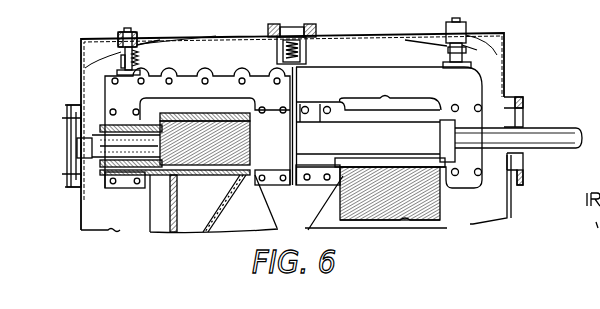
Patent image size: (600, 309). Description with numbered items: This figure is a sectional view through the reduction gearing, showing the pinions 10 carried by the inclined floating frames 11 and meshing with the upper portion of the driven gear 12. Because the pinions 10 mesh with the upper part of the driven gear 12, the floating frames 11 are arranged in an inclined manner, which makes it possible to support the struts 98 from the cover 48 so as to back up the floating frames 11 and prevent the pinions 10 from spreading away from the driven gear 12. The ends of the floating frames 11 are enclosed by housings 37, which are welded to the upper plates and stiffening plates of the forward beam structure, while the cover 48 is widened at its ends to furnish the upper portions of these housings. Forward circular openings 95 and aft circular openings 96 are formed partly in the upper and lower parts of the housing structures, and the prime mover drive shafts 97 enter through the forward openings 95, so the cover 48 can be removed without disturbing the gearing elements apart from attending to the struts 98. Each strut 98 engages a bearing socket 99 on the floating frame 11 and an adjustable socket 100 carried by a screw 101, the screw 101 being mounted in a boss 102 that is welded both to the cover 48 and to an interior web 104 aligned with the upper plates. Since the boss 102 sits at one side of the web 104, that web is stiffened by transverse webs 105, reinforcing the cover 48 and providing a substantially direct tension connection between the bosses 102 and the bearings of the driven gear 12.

The pinions 10 is at (207, 103).
The floating frames 11 is at (367, 66).
The driven gear 12 is at (383, 214).
The housings 37 is at (100, 186).
The cover 48 is at (216, 36).
The forward circular openings 95 is at (523, 121).
The aft circular openings 96 is at (68, 132).
The prime mover drive shafts 97 is at (570, 127).
The struts 98 is at (120, 50).
The bearing sockets 99 is at (142, 72).
The adjustable sockets 100 is at (141, 46).
The screws 101 is at (128, 30).
The bosses 102 is at (138, 36).
The interior webs 104 is at (137, 52).
The transverse webs 105 is at (85, 68).